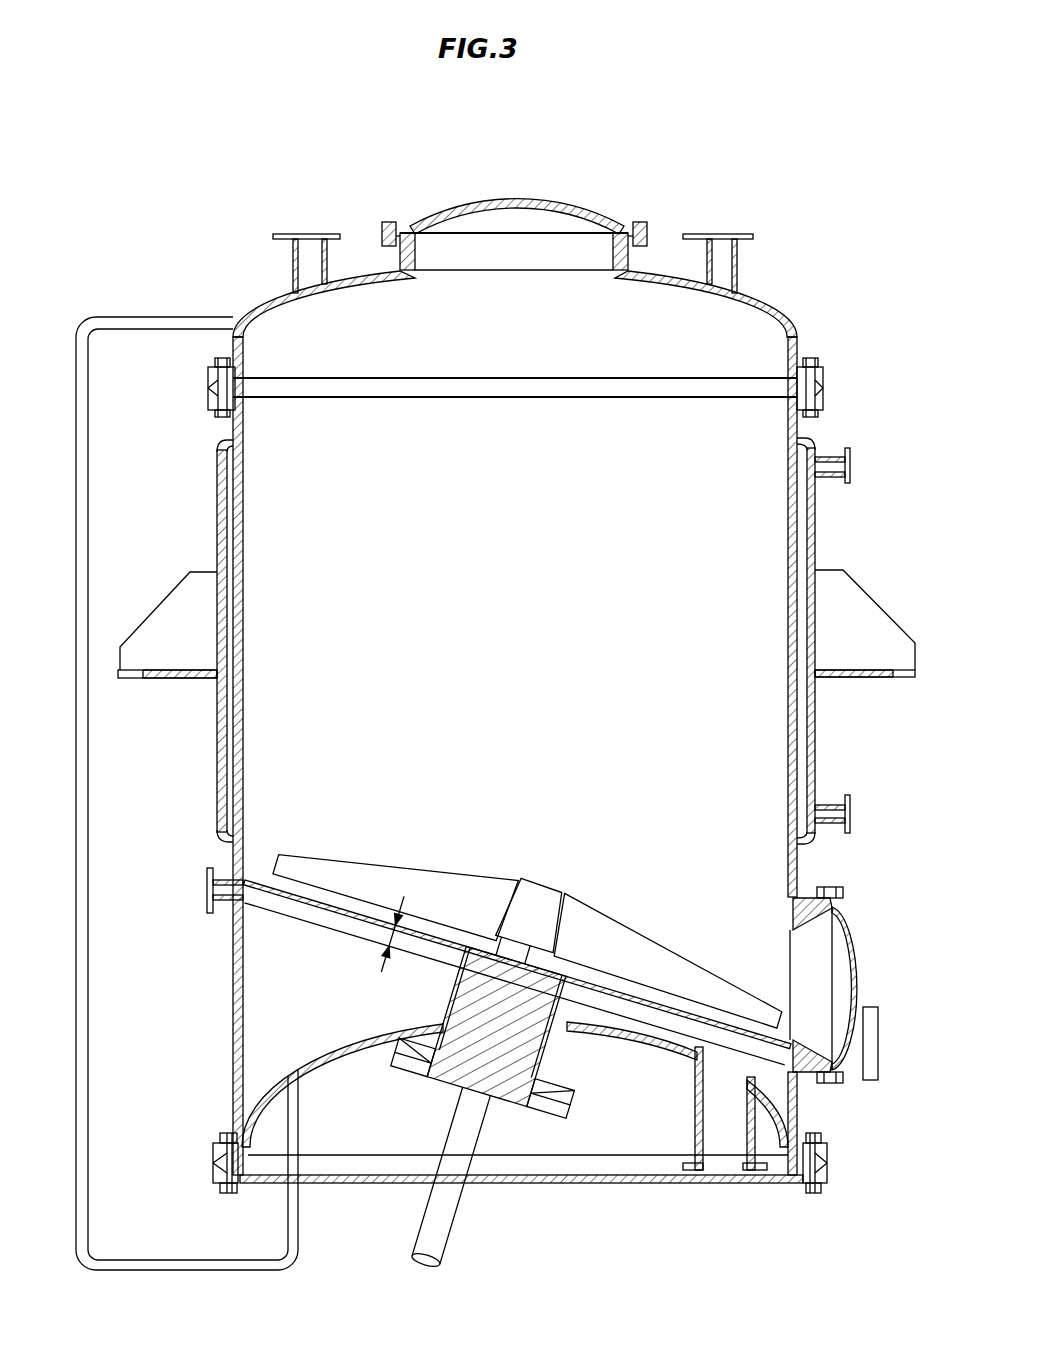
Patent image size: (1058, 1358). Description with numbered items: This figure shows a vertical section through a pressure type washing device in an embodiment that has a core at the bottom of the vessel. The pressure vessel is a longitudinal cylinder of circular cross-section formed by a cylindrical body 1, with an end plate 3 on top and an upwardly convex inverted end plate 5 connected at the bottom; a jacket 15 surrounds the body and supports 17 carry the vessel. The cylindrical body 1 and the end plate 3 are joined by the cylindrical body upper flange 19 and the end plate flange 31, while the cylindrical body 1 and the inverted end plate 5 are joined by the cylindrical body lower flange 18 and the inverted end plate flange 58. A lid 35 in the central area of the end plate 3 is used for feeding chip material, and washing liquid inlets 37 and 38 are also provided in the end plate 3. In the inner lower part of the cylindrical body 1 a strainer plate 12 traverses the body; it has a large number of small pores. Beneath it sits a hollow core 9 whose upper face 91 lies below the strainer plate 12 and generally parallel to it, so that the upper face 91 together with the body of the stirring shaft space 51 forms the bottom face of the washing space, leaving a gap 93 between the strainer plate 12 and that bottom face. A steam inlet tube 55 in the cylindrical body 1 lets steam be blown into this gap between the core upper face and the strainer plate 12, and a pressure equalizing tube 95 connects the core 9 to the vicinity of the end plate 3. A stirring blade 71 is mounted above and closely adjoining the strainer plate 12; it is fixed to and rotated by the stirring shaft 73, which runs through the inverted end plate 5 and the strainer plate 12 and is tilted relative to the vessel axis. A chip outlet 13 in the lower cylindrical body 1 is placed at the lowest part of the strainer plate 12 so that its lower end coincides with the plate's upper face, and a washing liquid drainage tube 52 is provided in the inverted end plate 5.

The cylindrical body 1 is at (511, 744).
The end plate 3 is at (795, 300).
The inverted end plate 5 is at (352, 1130).
The core 9 is at (272, 1020).
The strainer plate 12 is at (532, 913).
The chip outlet 13 is at (817, 970).
The jacket 15 is at (817, 748).
The support 17 is at (855, 598).
The lower flange of the cylindrical body 18 is at (827, 1150).
The upper flange of the cylindrical body 19 is at (825, 418).
The end plate flange 31 is at (823, 362).
The lid 35 is at (483, 245).
The washing liquid inlet 37 is at (318, 237).
The washing liquid inlet 38 is at (738, 237).
The stirring shaft space 51 is at (540, 1044).
The liquid drainage tube 52 is at (720, 1145).
The steam inlet tube 55 is at (195, 870).
The inverted end plate flange 58 is at (823, 1183).
The stirring blade 71 is at (385, 875).
The stirring shaft 73 is at (445, 1222).
The upper face 91 is at (288, 905).
The gap 93 is at (400, 936).
The pressure equalizing tube 95 is at (92, 975).